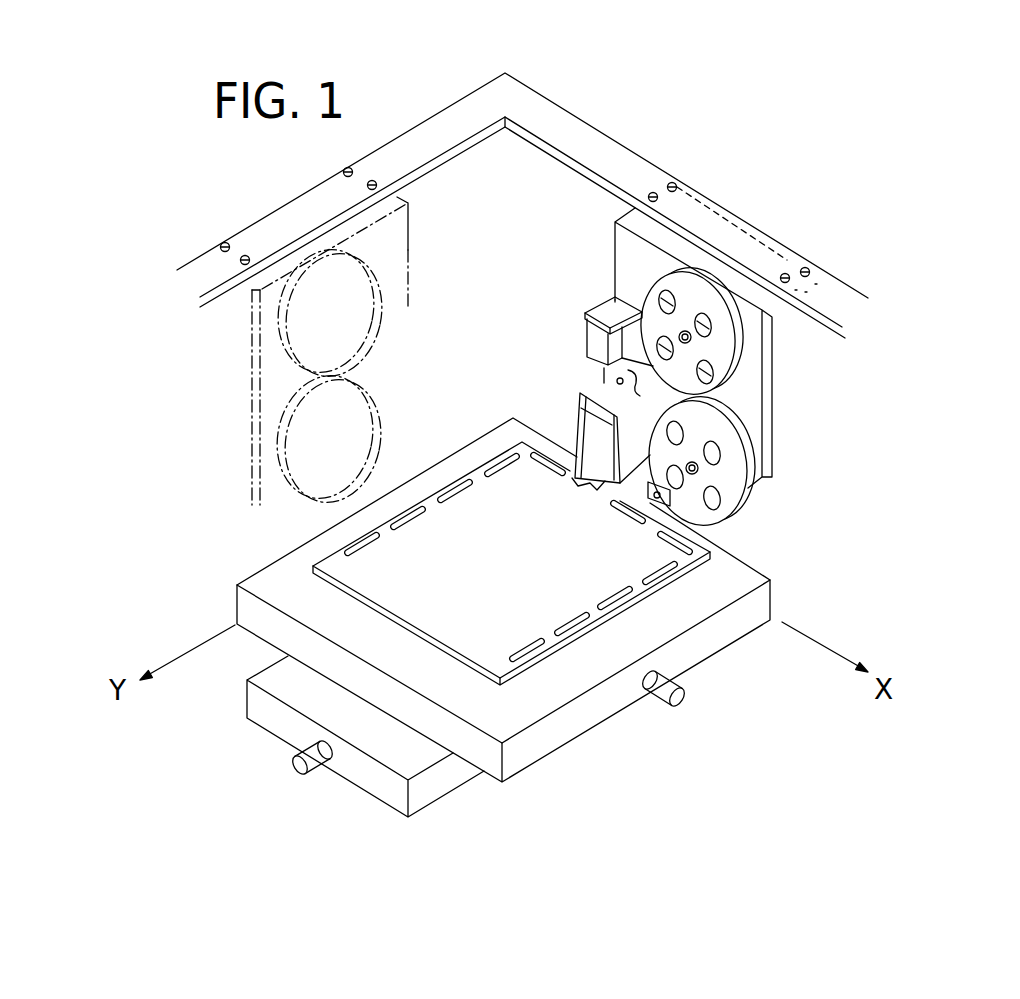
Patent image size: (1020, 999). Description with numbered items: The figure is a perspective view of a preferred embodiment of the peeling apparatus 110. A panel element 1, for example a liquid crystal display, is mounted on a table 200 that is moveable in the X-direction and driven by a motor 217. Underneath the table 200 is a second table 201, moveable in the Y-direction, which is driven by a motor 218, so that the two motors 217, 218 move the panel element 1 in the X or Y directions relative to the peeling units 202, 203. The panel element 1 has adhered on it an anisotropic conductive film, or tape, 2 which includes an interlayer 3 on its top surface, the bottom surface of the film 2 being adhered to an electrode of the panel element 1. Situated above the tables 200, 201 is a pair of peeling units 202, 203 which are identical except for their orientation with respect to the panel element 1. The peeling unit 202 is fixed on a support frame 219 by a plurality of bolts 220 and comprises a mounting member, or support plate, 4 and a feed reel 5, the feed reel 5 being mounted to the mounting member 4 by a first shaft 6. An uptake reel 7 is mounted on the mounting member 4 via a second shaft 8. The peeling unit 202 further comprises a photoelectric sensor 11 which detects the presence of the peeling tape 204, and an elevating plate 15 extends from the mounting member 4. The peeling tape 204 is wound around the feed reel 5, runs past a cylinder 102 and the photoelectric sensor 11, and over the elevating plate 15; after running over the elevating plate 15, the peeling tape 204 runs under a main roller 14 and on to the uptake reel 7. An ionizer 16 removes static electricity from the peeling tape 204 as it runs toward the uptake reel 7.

The panel element 1 is at (355, 572).
The anisotropic conductive film 2 is at (423, 510).
The interlayer 3 is at (407, 513).
The mounting member 4 is at (252, 378).
The feed reel 5 is at (375, 278).
The first shaft 6 is at (688, 343).
The uptake reel 7 is at (392, 410).
The second shaft 8 is at (693, 470).
The photoelectric sensor 11 is at (638, 399).
The main roller 14 is at (590, 492).
The elevating plate 15 is at (581, 408).
The ionizer 16 is at (643, 497).
The cylinder 102 is at (590, 340).
The peeling apparatus 110 is at (158, 462).
The table 200 is at (753, 575).
The table 201 is at (352, 768).
The peeling unit 202 is at (604, 249).
The peeling unit 203 is at (463, 208).
The peeling tape 204 is at (577, 413).
The motor 217 is at (657, 702).
The motor 218 is at (315, 768).
The support frame 219 is at (592, 147).
The bolts 220 is at (655, 190).